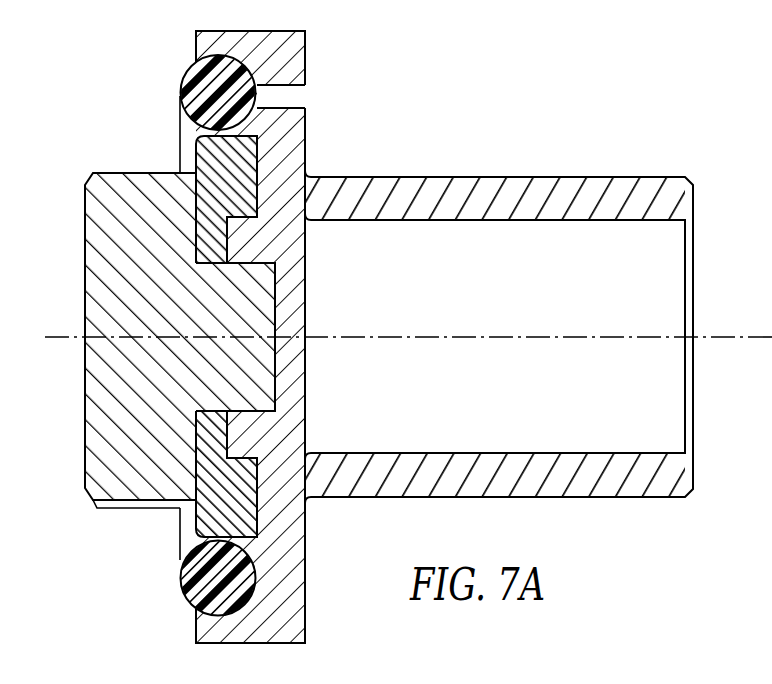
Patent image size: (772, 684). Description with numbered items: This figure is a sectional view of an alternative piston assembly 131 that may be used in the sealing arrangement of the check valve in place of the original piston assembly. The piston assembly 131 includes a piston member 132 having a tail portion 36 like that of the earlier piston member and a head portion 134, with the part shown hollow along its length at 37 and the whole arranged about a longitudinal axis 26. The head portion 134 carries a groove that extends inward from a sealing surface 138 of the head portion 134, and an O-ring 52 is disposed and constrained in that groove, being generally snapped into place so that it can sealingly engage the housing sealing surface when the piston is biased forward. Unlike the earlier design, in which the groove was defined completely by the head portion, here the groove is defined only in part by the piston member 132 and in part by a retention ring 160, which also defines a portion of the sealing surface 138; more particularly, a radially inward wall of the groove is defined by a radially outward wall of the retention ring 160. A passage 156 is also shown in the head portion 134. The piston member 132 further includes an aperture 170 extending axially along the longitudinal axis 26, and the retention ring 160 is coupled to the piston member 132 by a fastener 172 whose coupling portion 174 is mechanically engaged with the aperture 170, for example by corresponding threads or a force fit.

The longitudinal axis 26 is at (489, 333).
The tail portion 36 is at (610, 183).
The inner bore of hub 37 is at (660, 282).
The O-ring 52 is at (203, 91).
The piston assembly 131 is at (463, 332).
The piston member 132 is at (525, 310).
The head portion 134 is at (282, 332).
The sealing surface 138 is at (228, 338).
The slot in flange 156 is at (293, 96).
The retention ring 160 is at (238, 173).
The aperture 170 is at (244, 412).
The fastener 172 is at (195, 340).
The coupling portion 174 is at (257, 298).